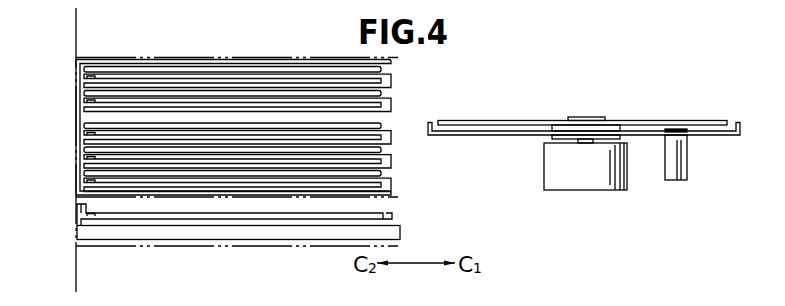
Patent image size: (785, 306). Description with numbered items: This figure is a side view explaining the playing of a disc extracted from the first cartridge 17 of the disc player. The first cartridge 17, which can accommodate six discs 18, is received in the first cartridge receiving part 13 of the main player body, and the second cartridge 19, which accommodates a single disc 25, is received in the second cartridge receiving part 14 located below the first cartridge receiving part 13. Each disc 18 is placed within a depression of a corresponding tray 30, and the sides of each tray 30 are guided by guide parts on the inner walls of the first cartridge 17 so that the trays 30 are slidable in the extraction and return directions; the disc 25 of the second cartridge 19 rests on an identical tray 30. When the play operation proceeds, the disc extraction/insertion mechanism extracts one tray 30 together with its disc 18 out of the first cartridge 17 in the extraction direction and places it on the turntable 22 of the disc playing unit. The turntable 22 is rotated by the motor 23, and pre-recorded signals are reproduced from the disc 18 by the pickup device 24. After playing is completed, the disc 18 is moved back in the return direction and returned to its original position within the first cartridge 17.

The first cartridge receiving part 13 is at (75, 51).
The second cartridge receiving part 14 is at (77, 246).
The first cartridge 17 is at (76, 94).
The discs 18 is at (180, 76).
The second cartridge 19 is at (77, 210).
The turntable 22 is at (590, 117).
The motor 23 is at (590, 185).
The pickup device 24 is at (683, 168).
The disc 25 is at (397, 199).
The tray 30 is at (393, 78).